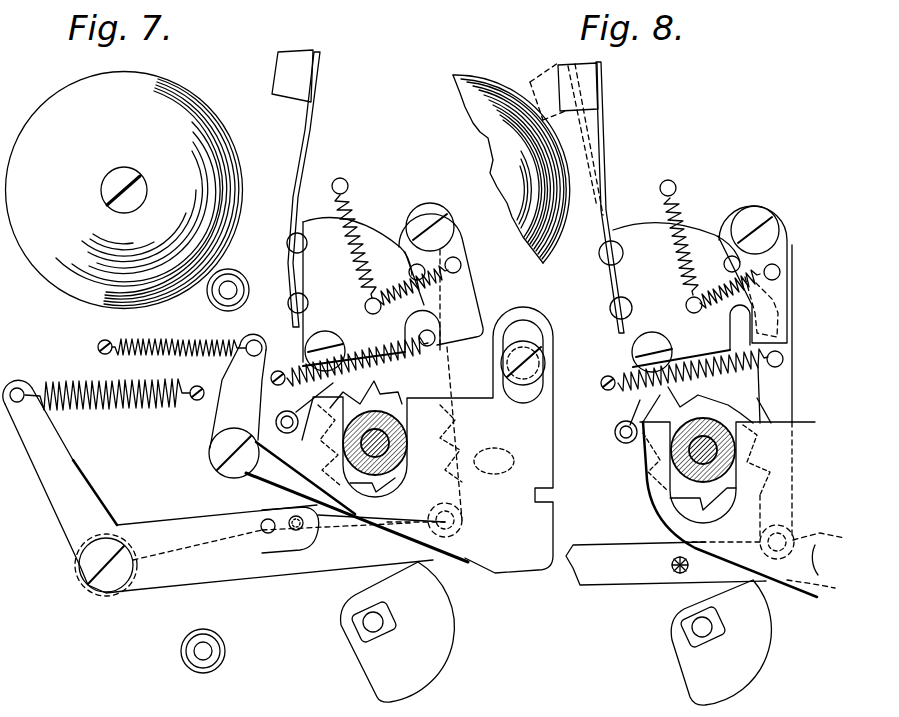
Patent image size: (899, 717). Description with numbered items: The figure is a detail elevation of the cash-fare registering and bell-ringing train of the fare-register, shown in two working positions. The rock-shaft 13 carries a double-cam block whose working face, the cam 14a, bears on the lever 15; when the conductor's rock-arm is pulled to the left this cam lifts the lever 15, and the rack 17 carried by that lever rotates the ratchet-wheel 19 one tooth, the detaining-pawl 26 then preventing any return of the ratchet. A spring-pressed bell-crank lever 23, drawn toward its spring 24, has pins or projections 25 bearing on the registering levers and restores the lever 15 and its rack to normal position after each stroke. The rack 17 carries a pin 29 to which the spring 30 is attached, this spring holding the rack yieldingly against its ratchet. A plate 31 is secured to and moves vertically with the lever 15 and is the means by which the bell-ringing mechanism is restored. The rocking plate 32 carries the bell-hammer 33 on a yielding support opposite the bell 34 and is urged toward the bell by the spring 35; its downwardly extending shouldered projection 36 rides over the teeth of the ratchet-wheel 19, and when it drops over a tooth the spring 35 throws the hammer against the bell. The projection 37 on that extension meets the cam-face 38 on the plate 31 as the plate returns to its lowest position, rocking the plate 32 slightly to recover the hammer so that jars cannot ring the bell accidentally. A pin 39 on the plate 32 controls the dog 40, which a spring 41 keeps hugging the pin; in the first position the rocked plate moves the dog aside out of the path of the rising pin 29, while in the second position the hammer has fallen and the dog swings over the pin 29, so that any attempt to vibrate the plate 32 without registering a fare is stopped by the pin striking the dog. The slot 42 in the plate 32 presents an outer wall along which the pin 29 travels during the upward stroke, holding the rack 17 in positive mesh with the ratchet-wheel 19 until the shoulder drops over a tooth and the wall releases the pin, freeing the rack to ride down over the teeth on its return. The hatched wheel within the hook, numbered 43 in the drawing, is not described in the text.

In FIG. 7, the rock-shaft 13 is at (372, 625).
In FIG. 8, the rock-shaft 13 is at (702, 630).
In FIG. 7, the cam 14a is at (398, 632).
In FIG. 8, the cam 14a is at (721, 642).
In FIG. 7, the lever 15 is at (353, 534).
In FIG. 8, the lever 15 is at (666, 563).
In FIG. 7, the rack 17 is at (437, 373).
In FIG. 8, the rack 17 is at (772, 395).
In FIG. 7, the ratchet-wheel 19 is at (368, 394).
In FIG. 8, the ratchet-wheel 19 is at (712, 417).
In FIG. 7, the bell-crank lever 23 is at (218, 488).
In FIG. 7, the spring 24 is at (116, 408).
In FIG. 7, the pins or projections 25 is at (296, 531).
In FIG. 7, the pawl 26 is at (338, 448).
In FIG. 7, the pin 29 is at (437, 344).
In FIG. 8, the pin 29 is at (781, 357).
In FIG. 7, the spring 30 is at (347, 358).
In FIG. 8, the spring 30 is at (612, 383).
In FIG. 7, the plate 31 is at (465, 434).
In FIG. 8, the plate 31 is at (799, 413).
In FIG. 7, the rocking plate 32 is at (357, 294).
In FIG. 8, the rocking plate 32 is at (676, 297).
In FIG. 7, the bell-hammer 33 is at (296, 188).
In FIG. 8, the bell-hammer 33 is at (581, 197).
In FIG. 7, the bell 34 is at (124, 190).
In FIG. 8, the bell 34 is at (503, 135).
In FIG. 7, the spring 35 is at (355, 211).
In FIG. 8, the spring 35 is at (680, 220).
In FIG. 7, the shouldered projection 36 is at (309, 411).
In FIG. 8, the shouldered projection 36 is at (644, 409).
In FIG. 7, the projection 37 is at (290, 433).
In FIG. 8, the projection 37 is at (614, 438).
In FIG. 7, the cam-face 38 is at (320, 411).
In FIG. 8, the cam-face 38 is at (640, 447).
In FIG. 7, the pin 39 is at (408, 262).
In FIG. 8, the pin 39 is at (727, 257).
In FIG. 7, the dog 40 is at (462, 290).
In FIG. 8, the dog 40 is at (768, 302).
In FIG. 7, the spring 41 is at (396, 297).
In FIG. 8, the spring 41 is at (726, 297).
In FIG. 7, the slot 42 is at (425, 320).
In FIG. 8, the slot 42 is at (742, 323).
In FIG. 7, the ratchet wheel 43 is at (385, 440).
In FIG. 8, the ratchet wheel 43 is at (707, 450).